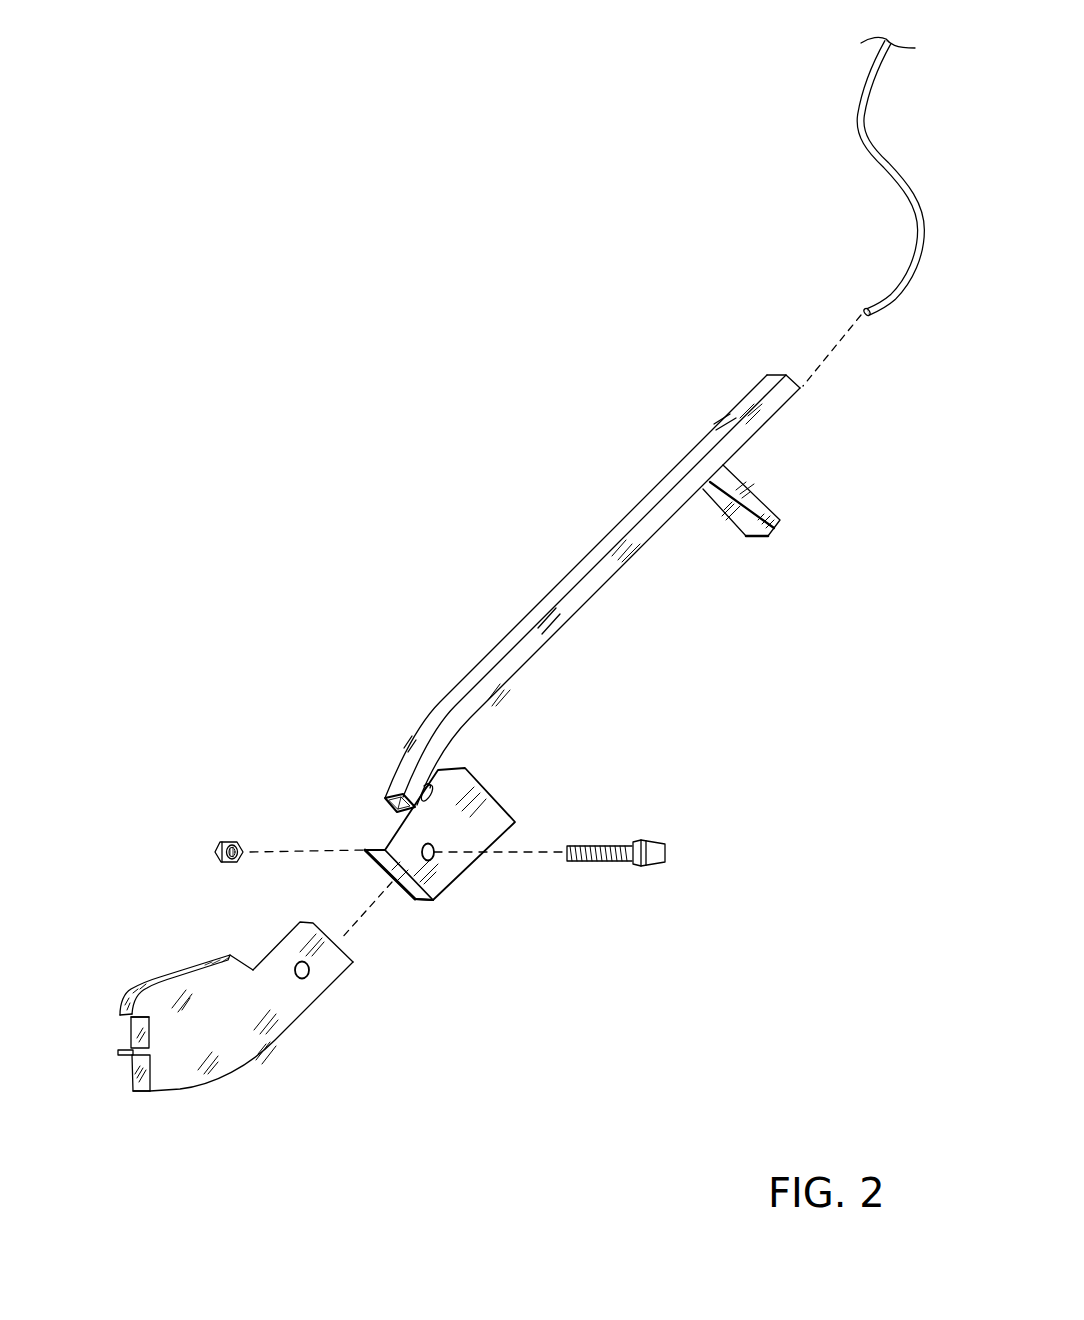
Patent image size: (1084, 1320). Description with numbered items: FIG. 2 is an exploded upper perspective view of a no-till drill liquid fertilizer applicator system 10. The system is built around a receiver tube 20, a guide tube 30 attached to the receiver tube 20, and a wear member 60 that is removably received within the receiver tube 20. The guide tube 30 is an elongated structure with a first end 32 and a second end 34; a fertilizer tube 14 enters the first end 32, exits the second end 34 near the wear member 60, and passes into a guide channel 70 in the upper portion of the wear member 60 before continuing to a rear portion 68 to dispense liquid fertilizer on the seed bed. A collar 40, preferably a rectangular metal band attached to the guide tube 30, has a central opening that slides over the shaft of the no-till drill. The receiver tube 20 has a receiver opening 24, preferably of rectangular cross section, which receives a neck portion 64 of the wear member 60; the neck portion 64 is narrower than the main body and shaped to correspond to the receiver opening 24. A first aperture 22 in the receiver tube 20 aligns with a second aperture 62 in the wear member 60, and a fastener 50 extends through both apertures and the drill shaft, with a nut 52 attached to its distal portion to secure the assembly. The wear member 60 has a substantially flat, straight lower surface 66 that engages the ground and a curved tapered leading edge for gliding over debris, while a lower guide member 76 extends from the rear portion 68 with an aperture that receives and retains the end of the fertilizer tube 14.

The no-till drill liquid fertilizer applicator system 10 is at (285, 247).
The fertilizer tube 14 is at (858, 132).
The receiver tube 20 is at (488, 803).
The first aperture 22 is at (437, 853).
The receiver opening 24 is at (413, 898).
The guide tube 30 is at (628, 520).
The first end 32 is at (782, 372).
The second end 34 is at (392, 808).
The collar 40 is at (763, 502).
The fastener 50 is at (647, 850).
The nut 52 is at (223, 845).
The wear member 60 is at (247, 1040).
The second aperture 62 is at (307, 972).
The neck portion 64 is at (278, 948).
The lower surface 66 is at (190, 1092).
The rear portion 68 is at (135, 1092).
The guide channel 70 is at (153, 980).
The lower guide member 76 is at (120, 1052).